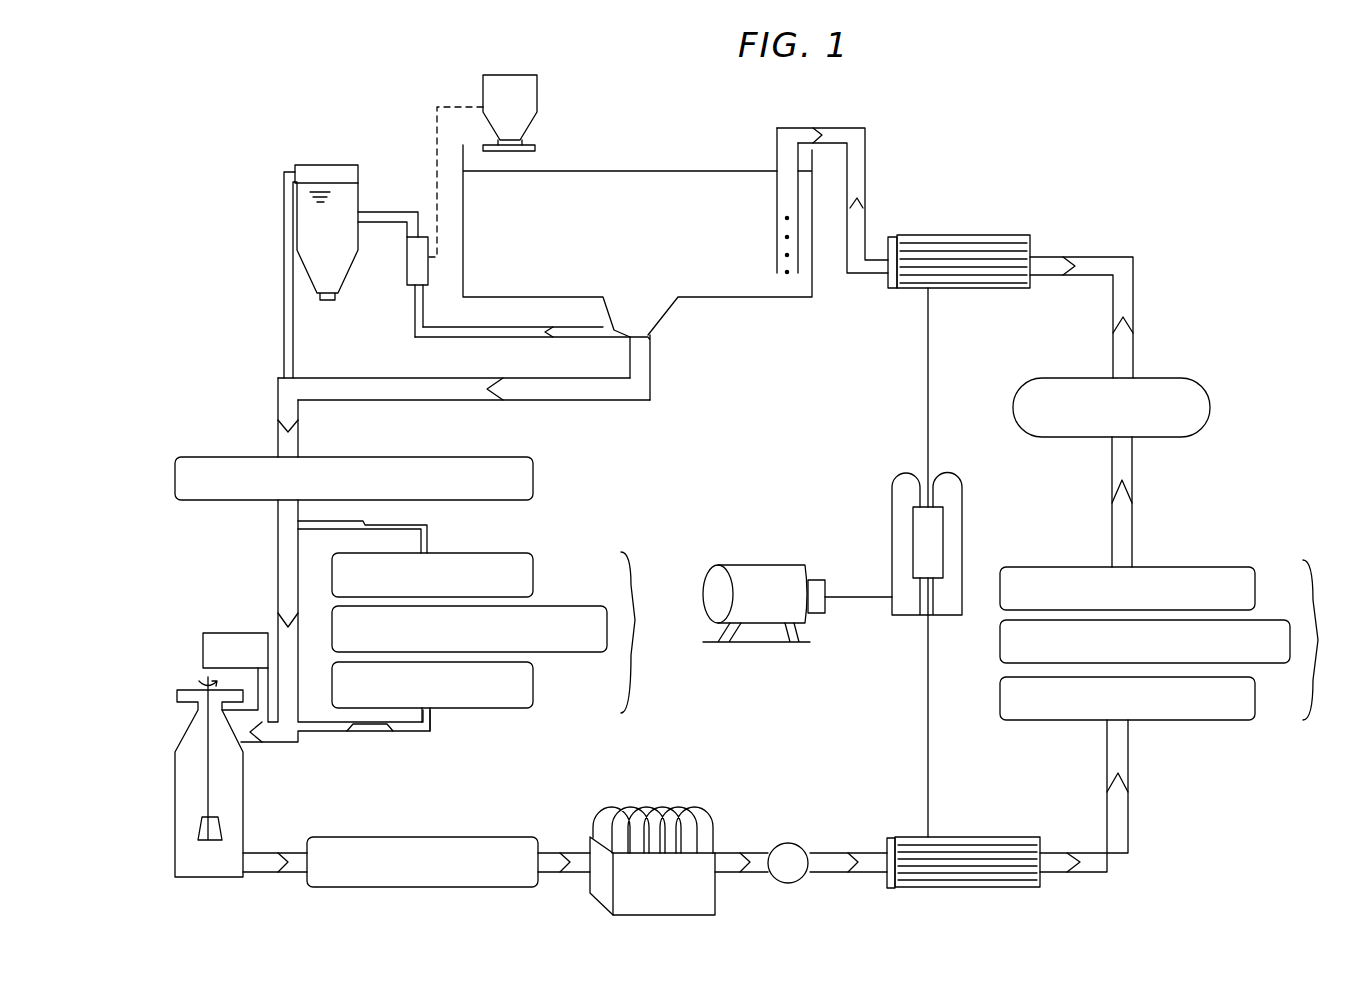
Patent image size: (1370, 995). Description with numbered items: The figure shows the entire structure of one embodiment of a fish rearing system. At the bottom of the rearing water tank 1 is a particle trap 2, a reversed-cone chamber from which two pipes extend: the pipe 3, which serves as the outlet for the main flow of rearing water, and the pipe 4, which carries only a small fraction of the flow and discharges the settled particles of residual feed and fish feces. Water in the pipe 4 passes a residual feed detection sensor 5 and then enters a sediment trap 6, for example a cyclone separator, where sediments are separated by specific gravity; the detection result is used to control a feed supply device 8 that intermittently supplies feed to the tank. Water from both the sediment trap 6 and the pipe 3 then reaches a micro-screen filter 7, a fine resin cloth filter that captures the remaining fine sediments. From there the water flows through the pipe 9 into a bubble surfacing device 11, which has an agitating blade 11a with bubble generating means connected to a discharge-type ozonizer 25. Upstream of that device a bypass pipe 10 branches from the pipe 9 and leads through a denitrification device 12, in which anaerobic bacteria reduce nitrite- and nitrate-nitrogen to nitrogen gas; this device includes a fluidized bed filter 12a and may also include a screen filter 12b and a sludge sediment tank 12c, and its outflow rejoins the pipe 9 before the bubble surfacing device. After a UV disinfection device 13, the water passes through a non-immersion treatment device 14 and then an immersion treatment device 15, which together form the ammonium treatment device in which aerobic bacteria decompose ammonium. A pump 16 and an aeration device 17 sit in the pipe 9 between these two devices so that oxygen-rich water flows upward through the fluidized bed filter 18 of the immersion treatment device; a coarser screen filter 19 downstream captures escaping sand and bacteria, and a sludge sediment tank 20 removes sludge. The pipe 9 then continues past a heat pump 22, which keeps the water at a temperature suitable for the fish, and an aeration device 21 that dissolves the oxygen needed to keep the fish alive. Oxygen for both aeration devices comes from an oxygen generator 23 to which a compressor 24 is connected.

The rearing water tank 1 is at (688, 152).
The particle trap 2 is at (655, 310).
The pipe 3 is at (570, 385).
The pipe 4 is at (497, 337).
The residual feed detection sensor 5 is at (410, 275).
The sediment trap 6 is at (323, 177).
The micro-screen filter 7 is at (192, 500).
The feed supply device 8 is at (527, 95).
The pipe 9 is at (1125, 292).
The bypass pipe 10 is at (427, 525).
The bubble surfacing device 11 is at (197, 735).
The agitating blade 11a is at (200, 827).
The denitrification device 12 is at (502, 648).
The fluidized bed filter 12a is at (537, 575).
The screen filter 12b is at (607, 633).
The sludge sediment tank 12c is at (533, 685).
The UV disinfection device 13 is at (357, 837).
The non-immersion treatment device 14 is at (610, 812).
The immersion treatment device 15 is at (1149, 614).
The pump 16 is at (797, 842).
The aeration device 17 is at (988, 842).
The fluidized bed filter 18 is at (1012, 567).
The screen filter 19 is at (1000, 640).
The sludge sediment tank 20 is at (1000, 703).
The aeration device 21 is at (985, 243).
The heat pump 22 is at (1202, 403).
The oxygen generator 23 is at (902, 485).
The compressor 24 is at (758, 585).
The ozonizer 25 is at (217, 642).